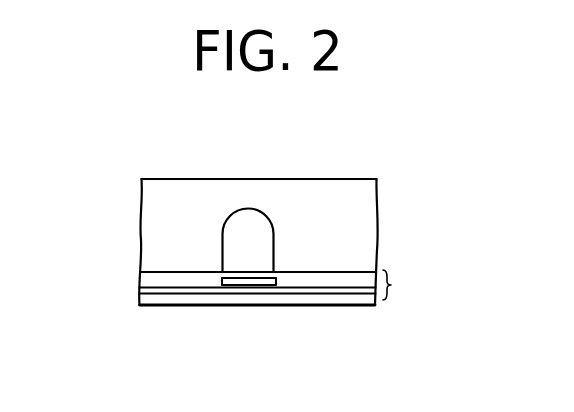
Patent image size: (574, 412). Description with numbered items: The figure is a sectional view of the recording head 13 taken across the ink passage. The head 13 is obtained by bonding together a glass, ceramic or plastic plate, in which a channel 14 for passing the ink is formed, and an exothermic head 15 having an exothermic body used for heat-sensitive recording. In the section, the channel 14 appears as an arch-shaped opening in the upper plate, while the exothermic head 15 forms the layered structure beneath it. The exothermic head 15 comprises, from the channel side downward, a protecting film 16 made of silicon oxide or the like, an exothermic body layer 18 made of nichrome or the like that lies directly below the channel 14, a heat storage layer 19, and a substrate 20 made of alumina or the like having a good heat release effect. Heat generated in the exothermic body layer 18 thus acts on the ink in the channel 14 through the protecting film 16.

The head 13 is at (160, 178).
The channel 14 is at (252, 208).
The exothermic head 15 is at (405, 287).
The protecting film 16 is at (295, 273).
The exothermic body layer 18 is at (278, 283).
The heat storage layer 19 is at (348, 288).
The substrate 20 is at (347, 308).